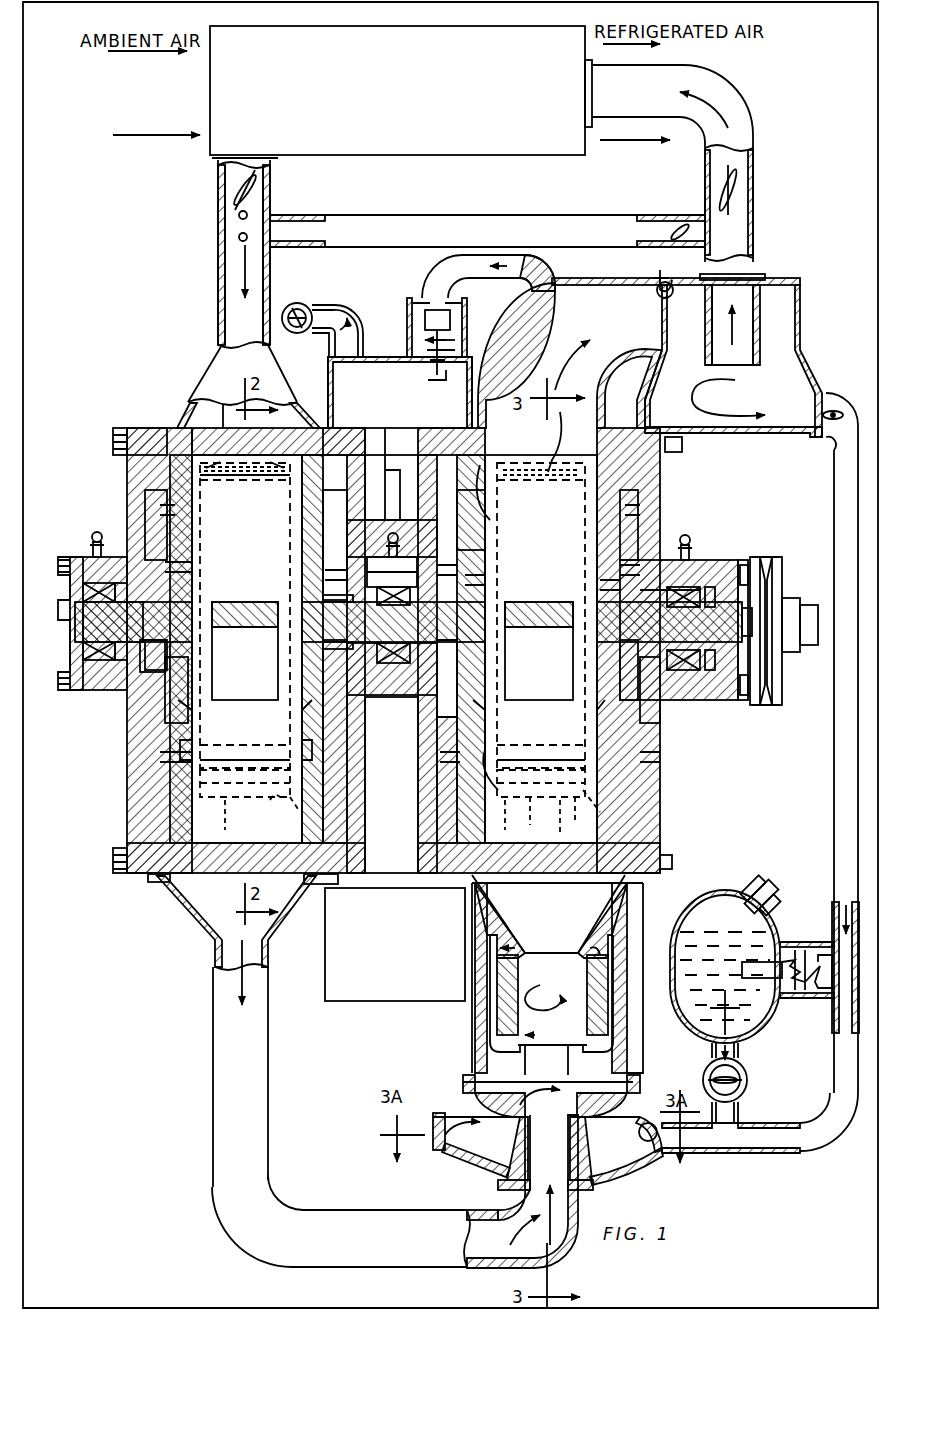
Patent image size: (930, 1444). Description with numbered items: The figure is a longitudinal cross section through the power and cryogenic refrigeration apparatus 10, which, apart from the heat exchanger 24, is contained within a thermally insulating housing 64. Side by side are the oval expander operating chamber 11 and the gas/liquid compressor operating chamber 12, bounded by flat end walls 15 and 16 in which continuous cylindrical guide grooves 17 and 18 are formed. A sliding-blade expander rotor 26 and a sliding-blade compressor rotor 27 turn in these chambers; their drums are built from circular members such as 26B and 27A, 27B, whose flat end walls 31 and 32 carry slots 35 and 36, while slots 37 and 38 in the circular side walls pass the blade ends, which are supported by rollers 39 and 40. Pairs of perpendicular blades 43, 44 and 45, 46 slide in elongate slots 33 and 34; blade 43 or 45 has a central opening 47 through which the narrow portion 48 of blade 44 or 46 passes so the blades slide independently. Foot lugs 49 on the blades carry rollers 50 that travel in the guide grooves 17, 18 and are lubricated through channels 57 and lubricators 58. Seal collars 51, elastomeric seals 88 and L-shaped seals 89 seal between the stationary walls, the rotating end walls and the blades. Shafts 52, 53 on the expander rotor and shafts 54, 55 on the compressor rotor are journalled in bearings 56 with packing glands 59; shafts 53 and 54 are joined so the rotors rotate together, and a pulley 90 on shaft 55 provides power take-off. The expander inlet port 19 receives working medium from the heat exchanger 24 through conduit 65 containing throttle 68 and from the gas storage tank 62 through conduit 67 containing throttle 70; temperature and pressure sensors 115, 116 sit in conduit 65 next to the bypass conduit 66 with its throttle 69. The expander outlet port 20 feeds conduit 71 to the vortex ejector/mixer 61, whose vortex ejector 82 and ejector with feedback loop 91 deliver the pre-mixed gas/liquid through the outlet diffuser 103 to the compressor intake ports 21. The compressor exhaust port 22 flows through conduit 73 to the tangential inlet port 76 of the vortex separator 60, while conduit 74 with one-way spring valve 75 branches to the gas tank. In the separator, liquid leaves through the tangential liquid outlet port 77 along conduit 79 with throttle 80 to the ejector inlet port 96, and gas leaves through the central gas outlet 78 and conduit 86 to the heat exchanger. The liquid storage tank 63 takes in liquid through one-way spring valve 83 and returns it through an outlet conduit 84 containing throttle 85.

The power and cryogenic refrigeration apparatus 10 is at (752, 110).
The expander operating chamber 11 is at (117, 792).
The gas/liquid compressor operating chamber 12 is at (665, 778).
The flat end wall 15 is at (300, 840).
The flat end wall 16 is at (595, 848).
The guide groove 17 is at (175, 555).
The guide groove 18 is at (485, 745).
The inlet port 19 is at (242, 386).
The outlet port 20 is at (200, 875).
The intake ports 21 is at (500, 875).
The exhaust port 22 is at (498, 425).
The heat exchanger 24 is at (388, 103).
The sliding-blade expander rotor 26 is at (150, 730).
The sliding-blade compressor rotor 27 is at (640, 503).
The circular member 26B is at (262, 812).
The circular member 27A is at (528, 822).
The circular member 27B is at (570, 810).
The flat end wall 31 is at (151, 658).
The flat end wall 32 is at (455, 712).
The elongate slot 33 is at (293, 528).
The elongate slot 34 is at (580, 537).
The slot 35 is at (196, 482).
The slot 36 is at (471, 520).
The slot 37 is at (270, 408).
The slot 38 is at (561, 439).
The roller 39 is at (295, 770).
The roller 40 is at (552, 768).
The rigid blade 43 is at (250, 734).
The rigid blade 44 is at (550, 728).
The rigid blade 45 is at (220, 630).
The rigid blade 46 is at (512, 635).
The central rectangular opening 47 is at (212, 660).
The central narrow rectangular portion 48 is at (392, 614).
The foot lug 49 is at (180, 735).
The roller 50 is at (160, 740).
The elastomeric seal collar 51 is at (401, 626).
The shaft 52 is at (113, 622).
The coaxial opposed shaft 53 is at (335, 622).
The shaft 54 is at (386, 625).
The coaxial opposed shaft 55 is at (446, 625).
The bearing 56 is at (95, 695).
The channel 57 is at (88, 552).
The lubricator 58 is at (100, 532).
The packing gland 59 is at (112, 680).
The vortex separator 60 is at (812, 330).
The vortex ejector/mixer 61 is at (460, 1035).
The gas storage tank 62 is at (396, 394).
The liquid storage tank 63 is at (710, 880).
The thermally insulating housing 64 is at (28, 315).
The conduit 65 is at (217, 253).
The bypass conduit 66 is at (468, 212).
The conduit 67 is at (322, 315).
The throttle 68 is at (240, 190).
The throttle 69 is at (676, 225).
The throttle 70 is at (297, 303).
The conduit 71 is at (480, 1215).
The conduit 73 is at (596, 283).
The conduit 74 is at (430, 285).
The one-way spring valve 75 is at (416, 298).
The tangential inlet port 76 is at (655, 278).
The tangential liquid outlet port 77 is at (825, 410).
The central gas outlet 78 is at (718, 280).
The conduit 79 is at (840, 452).
The throttle 80 is at (835, 410).
The vortex ejector 82 is at (650, 1115).
The one-way spring valve 83 is at (815, 960).
The drain pipe 84 is at (738, 1116).
The throttle 85 is at (742, 1072).
The conduit 86 is at (722, 195).
The elastomeric seal 88 is at (155, 428).
The L-shaped elastomeric seal 89 is at (185, 415).
The pulley 90 is at (780, 695).
The ejector with feedback loop 91 is at (628, 990).
The tangential inlet port 96 is at (646, 1143).
The outlet diffuser 103 is at (625, 905).
The temperature sensor 115 is at (248, 213).
The pressure sensor 116 is at (248, 234).